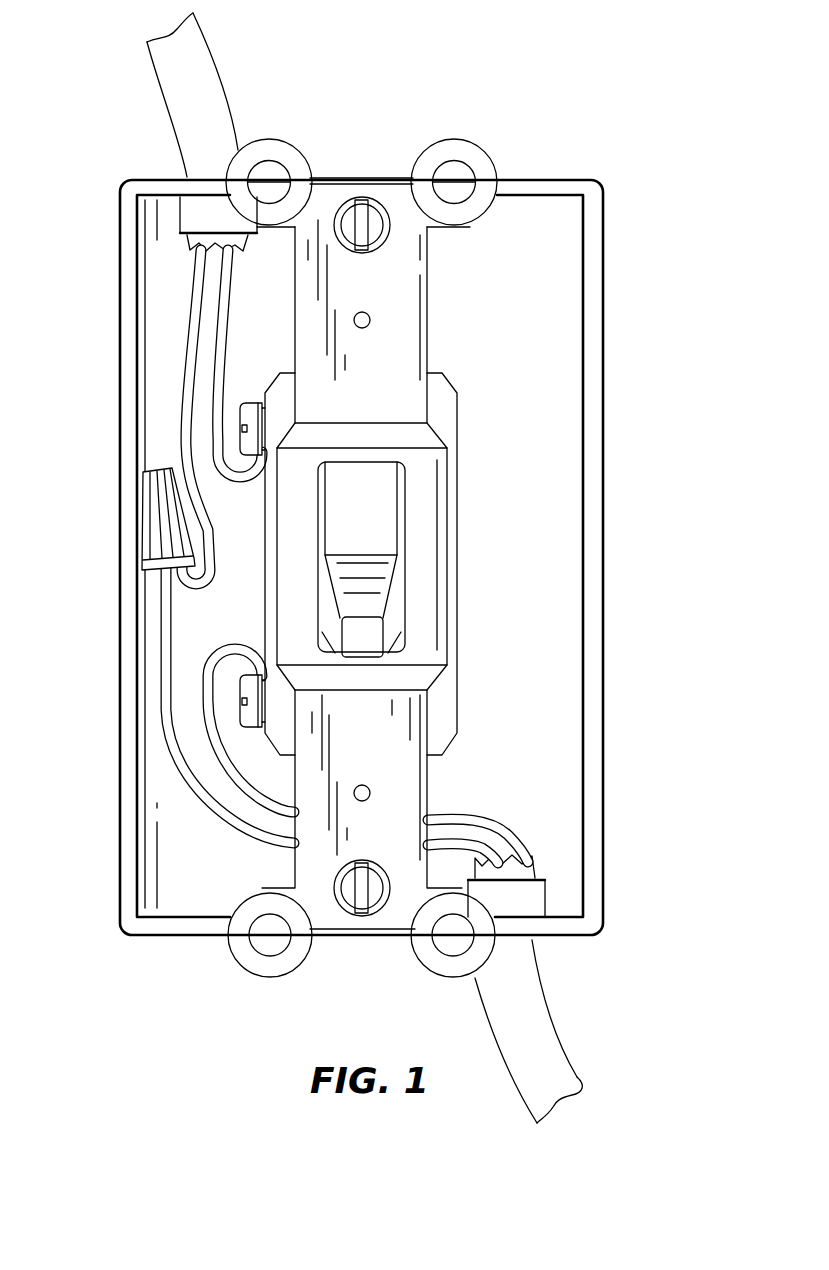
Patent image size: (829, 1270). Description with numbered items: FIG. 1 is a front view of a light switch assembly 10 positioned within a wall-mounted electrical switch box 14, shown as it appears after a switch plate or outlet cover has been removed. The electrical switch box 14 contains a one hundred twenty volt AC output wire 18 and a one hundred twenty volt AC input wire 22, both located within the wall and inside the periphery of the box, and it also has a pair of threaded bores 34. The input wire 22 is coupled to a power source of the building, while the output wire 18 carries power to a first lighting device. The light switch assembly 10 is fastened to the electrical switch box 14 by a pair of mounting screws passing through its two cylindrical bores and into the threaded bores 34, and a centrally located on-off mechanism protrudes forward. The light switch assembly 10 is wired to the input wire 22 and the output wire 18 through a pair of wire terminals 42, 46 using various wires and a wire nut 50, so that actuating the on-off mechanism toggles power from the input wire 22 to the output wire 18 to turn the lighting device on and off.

The light switch assembly 10 is at (510, 292).
The electrical switch box 14 is at (604, 506).
The 120 V AC output wire 18 is at (166, 87).
The 120 V AC input wire 22 is at (547, 1010).
The threaded bores 34 is at (383, 198).
The wire terminal 42 is at (243, 676).
The wire terminal 46 is at (242, 403).
The wire nut 50 is at (150, 545).